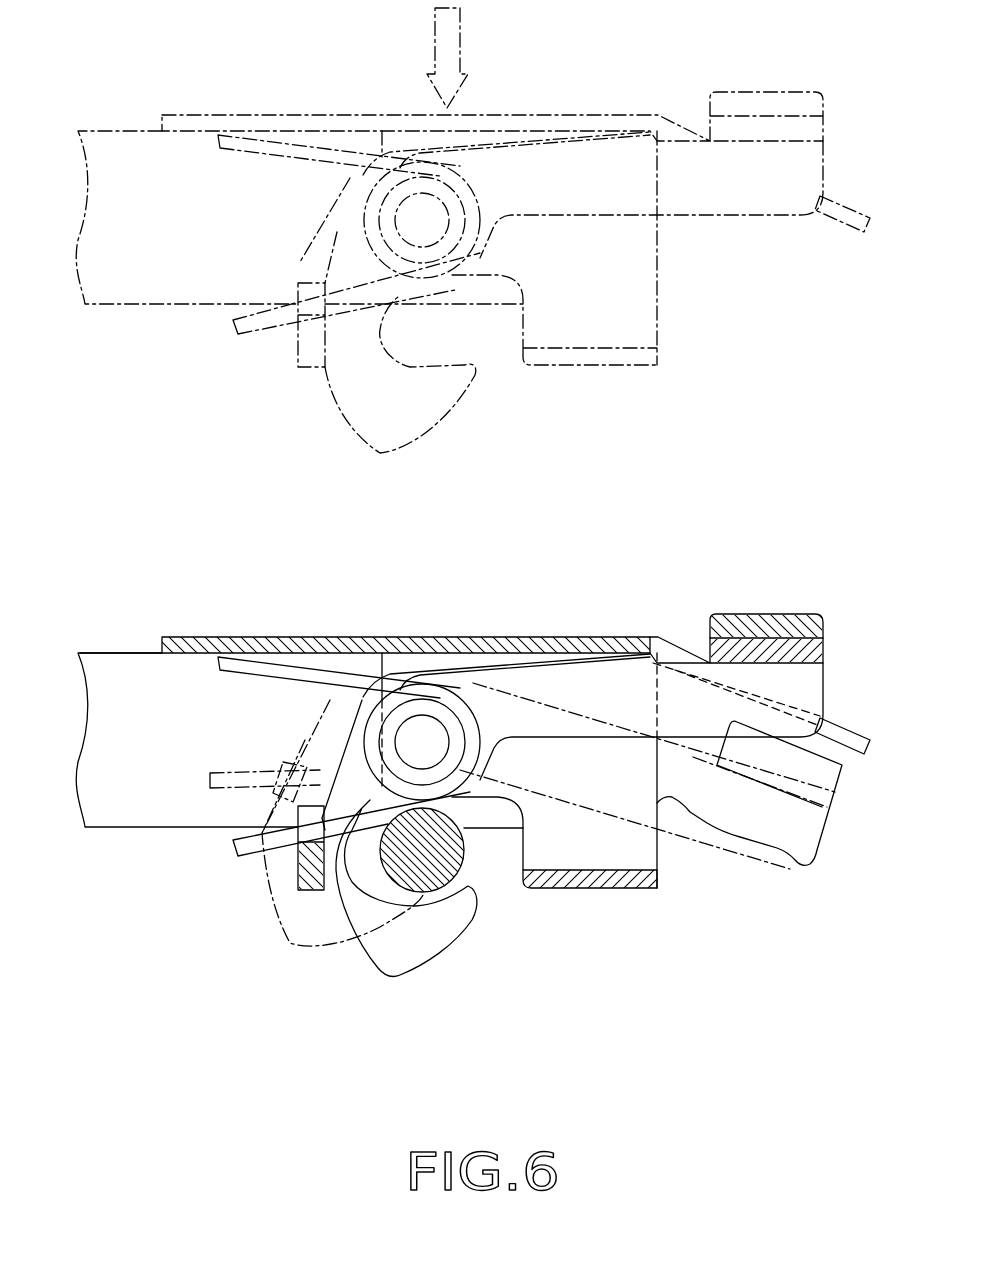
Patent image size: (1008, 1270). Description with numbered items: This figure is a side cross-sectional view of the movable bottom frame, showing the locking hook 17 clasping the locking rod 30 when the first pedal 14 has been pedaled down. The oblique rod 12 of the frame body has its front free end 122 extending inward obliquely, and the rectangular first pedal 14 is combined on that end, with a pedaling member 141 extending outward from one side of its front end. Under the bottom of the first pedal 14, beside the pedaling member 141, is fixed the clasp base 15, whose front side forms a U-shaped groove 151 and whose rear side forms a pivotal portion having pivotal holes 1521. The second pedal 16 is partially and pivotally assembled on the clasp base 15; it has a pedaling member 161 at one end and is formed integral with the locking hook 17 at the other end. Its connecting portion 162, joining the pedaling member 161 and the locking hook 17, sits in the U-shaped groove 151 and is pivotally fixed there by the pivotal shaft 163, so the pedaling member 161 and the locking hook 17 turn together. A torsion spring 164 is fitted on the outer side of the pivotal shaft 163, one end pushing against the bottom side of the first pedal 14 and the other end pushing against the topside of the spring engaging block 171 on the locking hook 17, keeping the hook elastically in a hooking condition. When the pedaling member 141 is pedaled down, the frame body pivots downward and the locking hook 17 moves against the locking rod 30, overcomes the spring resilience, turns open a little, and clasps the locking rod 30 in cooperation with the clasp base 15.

The oblique rod 12 is at (86, 700).
The front free end of oblique rod 122 is at (118, 652).
The first pedal 14 is at (342, 637).
The pedaling member 141 is at (840, 725).
The clasp base 15 is at (577, 785).
The U-shaped groove 151 is at (655, 870).
The pivotal hole 1521 is at (424, 720).
The second pedal 16 is at (813, 590).
The pedaling member 161 is at (777, 614).
The connecting portion 162 is at (620, 665).
The pivotal shaft 163 is at (462, 728).
The torsion spring 164 is at (268, 680).
The locking hook 17 is at (473, 890).
The spring engaging block 171 is at (297, 877).
The locking rod 30 is at (462, 848).